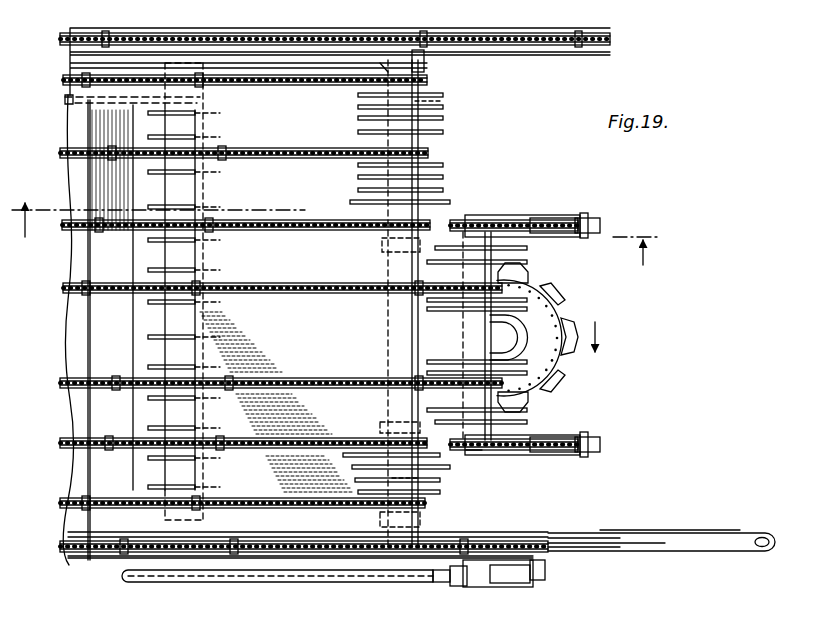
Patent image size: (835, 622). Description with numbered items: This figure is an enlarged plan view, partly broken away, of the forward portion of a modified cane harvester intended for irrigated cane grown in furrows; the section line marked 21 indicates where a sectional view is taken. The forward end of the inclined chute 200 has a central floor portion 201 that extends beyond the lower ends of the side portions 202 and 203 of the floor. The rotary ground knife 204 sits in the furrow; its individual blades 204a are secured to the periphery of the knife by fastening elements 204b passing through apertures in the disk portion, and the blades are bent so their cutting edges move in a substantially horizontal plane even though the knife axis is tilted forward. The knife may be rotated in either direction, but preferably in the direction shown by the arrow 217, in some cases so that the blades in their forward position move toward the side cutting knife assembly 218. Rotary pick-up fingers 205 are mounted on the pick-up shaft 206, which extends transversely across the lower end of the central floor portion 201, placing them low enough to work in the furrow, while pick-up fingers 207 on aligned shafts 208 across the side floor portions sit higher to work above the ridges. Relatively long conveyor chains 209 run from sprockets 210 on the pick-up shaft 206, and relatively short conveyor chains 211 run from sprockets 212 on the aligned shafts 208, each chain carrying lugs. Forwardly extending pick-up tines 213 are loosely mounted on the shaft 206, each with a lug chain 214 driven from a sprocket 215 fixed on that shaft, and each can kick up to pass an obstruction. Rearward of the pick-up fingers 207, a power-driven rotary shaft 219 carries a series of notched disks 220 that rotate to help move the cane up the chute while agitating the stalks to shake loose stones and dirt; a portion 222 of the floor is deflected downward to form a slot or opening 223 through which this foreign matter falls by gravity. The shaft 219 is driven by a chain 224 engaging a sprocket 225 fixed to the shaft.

The inclined chute 200 is at (342, 522).
The central floor portion 201 is at (468, 238).
The side portion of the floor 202 is at (300, 62).
The side portion of the floor 203 is at (245, 520).
The rotary ground knife 204 is at (556, 318).
The blades 204a is at (560, 372).
The fastening elements 204b is at (565, 335).
The rotary pick-up fingers 205 is at (523, 262).
The pick-up shaft 206 is at (488, 214).
The pick-up fingers 207 is at (445, 133).
The aligned shafts 208 is at (440, 101).
The conveyor chains 209 is at (330, 294).
The sprockets 210 is at (500, 287).
The conveyor chains 211 is at (305, 148).
The sprockets 212 is at (428, 80).
The pick-up tines 213 is at (567, 215).
The lug chain 214 is at (548, 220).
The sprocket 215 is at (472, 451).
The arrow 217 is at (598, 345).
The side cutting knife assembly 218 is at (553, 562).
The rotary shaft 219 is at (200, 98).
The disks 220 is at (148, 270).
The floor portion 222 is at (100, 414).
The slot or opening 223 is at (142, 468).
The chain 224 is at (68, 103).
The sprocket 225 is at (198, 103).
The section line 21- 21 is at (336, 222).